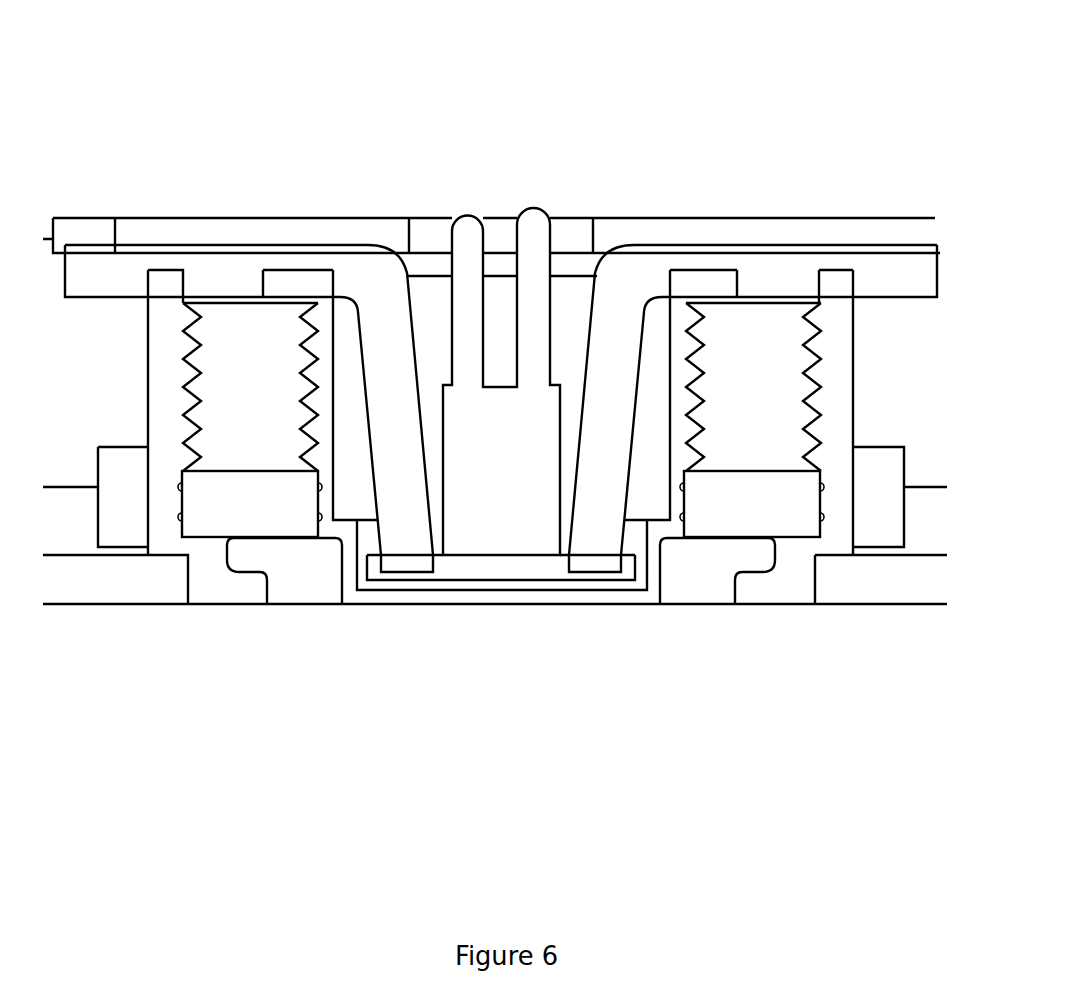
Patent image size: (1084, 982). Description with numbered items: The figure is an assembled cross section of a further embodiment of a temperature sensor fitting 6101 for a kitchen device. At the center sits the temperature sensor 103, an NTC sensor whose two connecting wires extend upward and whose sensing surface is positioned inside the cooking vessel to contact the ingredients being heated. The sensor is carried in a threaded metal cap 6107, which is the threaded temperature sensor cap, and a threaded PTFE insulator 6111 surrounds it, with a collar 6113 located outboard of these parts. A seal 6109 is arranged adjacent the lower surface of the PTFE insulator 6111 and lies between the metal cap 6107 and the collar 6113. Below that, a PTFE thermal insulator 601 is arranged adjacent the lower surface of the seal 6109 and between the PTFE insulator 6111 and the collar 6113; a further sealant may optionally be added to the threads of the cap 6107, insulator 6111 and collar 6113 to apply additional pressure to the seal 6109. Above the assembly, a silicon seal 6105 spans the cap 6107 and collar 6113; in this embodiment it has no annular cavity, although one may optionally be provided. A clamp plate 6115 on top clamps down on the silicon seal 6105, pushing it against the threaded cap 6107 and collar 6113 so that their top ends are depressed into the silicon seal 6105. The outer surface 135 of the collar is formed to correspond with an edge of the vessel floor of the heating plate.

The temperature sensor fitting 6101 is at (491, 145).
The clamp plate 6115 is at (771, 183).
The metal cap 6107 is at (697, 244).
The silicon seal 6105 is at (501, 408).
The collar 6113 is at (826, 250).
The PTFE insulator 6111 is at (502, 387).
The seal 6109 is at (501, 504).
The PTFE thermal insulator 601 is at (501, 571).
The temperature sensor 103 is at (501, 381).
The outer surface 135 is at (860, 573).